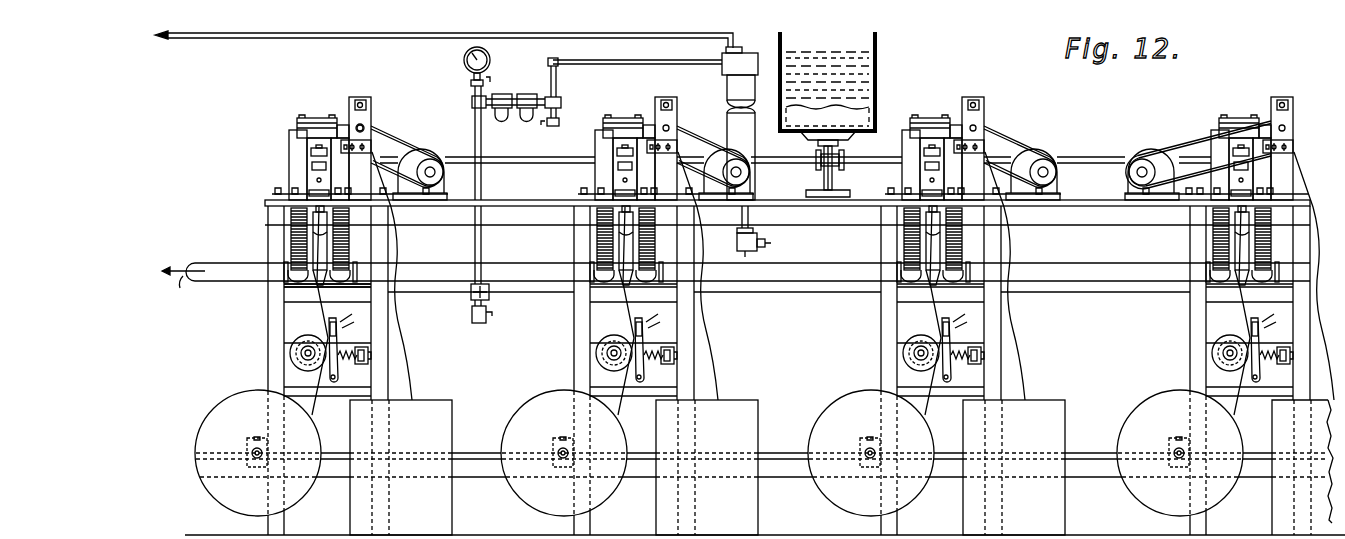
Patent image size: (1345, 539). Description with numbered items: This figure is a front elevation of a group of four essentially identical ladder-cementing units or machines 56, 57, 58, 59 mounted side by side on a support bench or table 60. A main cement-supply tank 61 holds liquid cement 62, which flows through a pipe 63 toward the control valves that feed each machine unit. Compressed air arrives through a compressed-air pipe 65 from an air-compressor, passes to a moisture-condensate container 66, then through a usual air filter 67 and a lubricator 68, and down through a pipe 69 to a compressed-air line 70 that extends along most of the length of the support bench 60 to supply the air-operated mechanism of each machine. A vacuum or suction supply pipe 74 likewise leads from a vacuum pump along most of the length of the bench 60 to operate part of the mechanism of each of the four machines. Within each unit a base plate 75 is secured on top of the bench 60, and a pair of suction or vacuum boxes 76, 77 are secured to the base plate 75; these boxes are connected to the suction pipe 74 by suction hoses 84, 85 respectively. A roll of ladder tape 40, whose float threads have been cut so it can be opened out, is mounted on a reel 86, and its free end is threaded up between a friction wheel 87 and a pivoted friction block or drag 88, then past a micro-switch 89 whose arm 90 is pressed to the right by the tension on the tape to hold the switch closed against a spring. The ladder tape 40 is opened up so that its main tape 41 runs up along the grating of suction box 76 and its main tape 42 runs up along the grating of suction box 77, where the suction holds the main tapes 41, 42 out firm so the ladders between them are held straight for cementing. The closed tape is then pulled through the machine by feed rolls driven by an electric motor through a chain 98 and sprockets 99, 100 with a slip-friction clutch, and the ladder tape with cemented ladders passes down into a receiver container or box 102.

The ladder tape 40 is at (400, 247).
The main tape 41 is at (326, 299).
The main tape 42 is at (313, 298).
The ladder-cementing unit 56 is at (355, 143).
The ladder-cementing unit 57 is at (621, 117).
The ladder-cementing unit 58 is at (946, 102).
The ladder-cementing unit 59 is at (1250, 105).
The support bench 60 is at (266, 217).
The main cement-supply tank 61 is at (877, 72).
The liquid cement 62 is at (870, 55).
The pipe 63 is at (568, 160).
The compressed-air pipe 65 is at (337, 37).
The moisture-condensate container 66 is at (727, 86).
The air filter 67 is at (528, 93).
The lubricator 68 is at (511, 86).
The pipe 69 is at (482, 150).
The compressed-air line 70 is at (523, 294).
The vacuum supply pipe 74 is at (252, 262).
The base plate 75 is at (286, 191).
The suction box 76 is at (340, 175).
The suction box 77 is at (290, 151).
The suction hose 84 is at (344, 232).
The suction hose 85 is at (292, 235).
The reel 86 is at (200, 466).
The friction wheel 87 is at (292, 358).
The friction block 88 is at (340, 368).
The micro-switch 89 is at (342, 328).
The arm 90 is at (329, 315).
The chain 98 is at (406, 143).
The sprocket 99 is at (420, 160).
The sprocket 100 is at (366, 124).
The container 102 is at (450, 410).